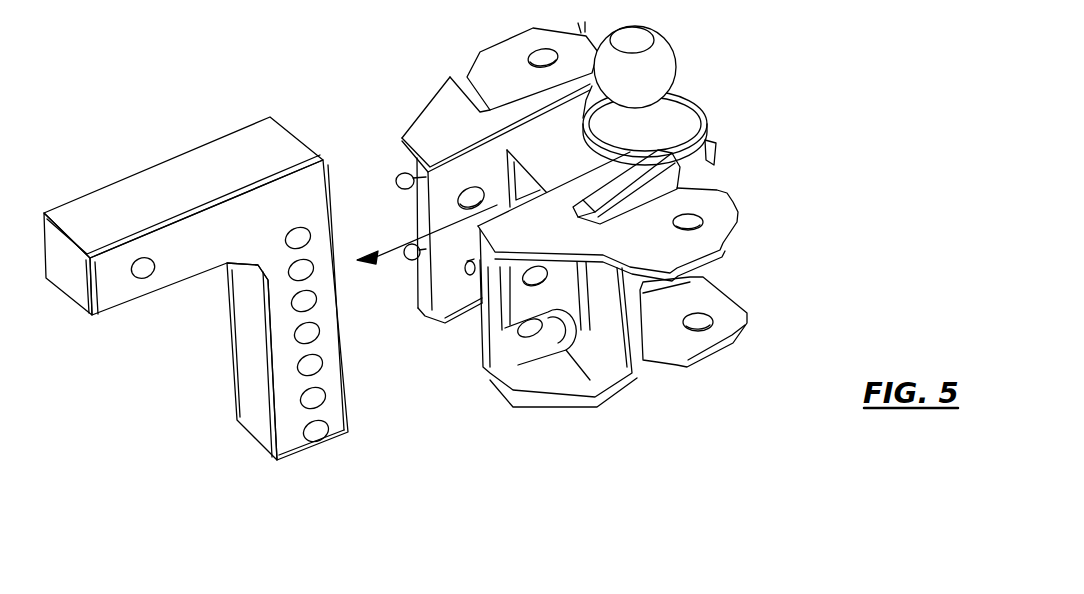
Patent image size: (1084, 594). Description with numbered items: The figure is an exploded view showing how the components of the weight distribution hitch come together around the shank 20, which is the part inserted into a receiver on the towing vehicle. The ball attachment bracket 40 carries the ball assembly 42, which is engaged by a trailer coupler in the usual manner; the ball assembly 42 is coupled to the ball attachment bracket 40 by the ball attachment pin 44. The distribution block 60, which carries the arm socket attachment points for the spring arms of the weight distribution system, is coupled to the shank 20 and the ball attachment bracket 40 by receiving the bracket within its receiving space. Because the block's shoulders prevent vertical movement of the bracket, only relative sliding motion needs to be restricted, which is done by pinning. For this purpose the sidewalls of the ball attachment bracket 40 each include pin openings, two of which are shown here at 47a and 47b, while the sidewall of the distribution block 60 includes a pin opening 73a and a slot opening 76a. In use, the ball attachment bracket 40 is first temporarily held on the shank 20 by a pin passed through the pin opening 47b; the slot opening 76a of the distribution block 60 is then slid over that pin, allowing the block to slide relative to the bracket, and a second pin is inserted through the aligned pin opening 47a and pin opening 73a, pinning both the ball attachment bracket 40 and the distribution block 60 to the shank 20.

The shank 20 is at (210, 158).
The ball attachment bracket 40 is at (560, 153).
The ball assembly 42 is at (650, 72).
The ball attachment pin 44 is at (713, 160).
The pin opening 47a is at (457, 200).
The pin opening 47b is at (470, 264).
The distribution block 60 is at (570, 232).
The pin opening 73a is at (542, 280).
The slot opening 76a is at (507, 385).